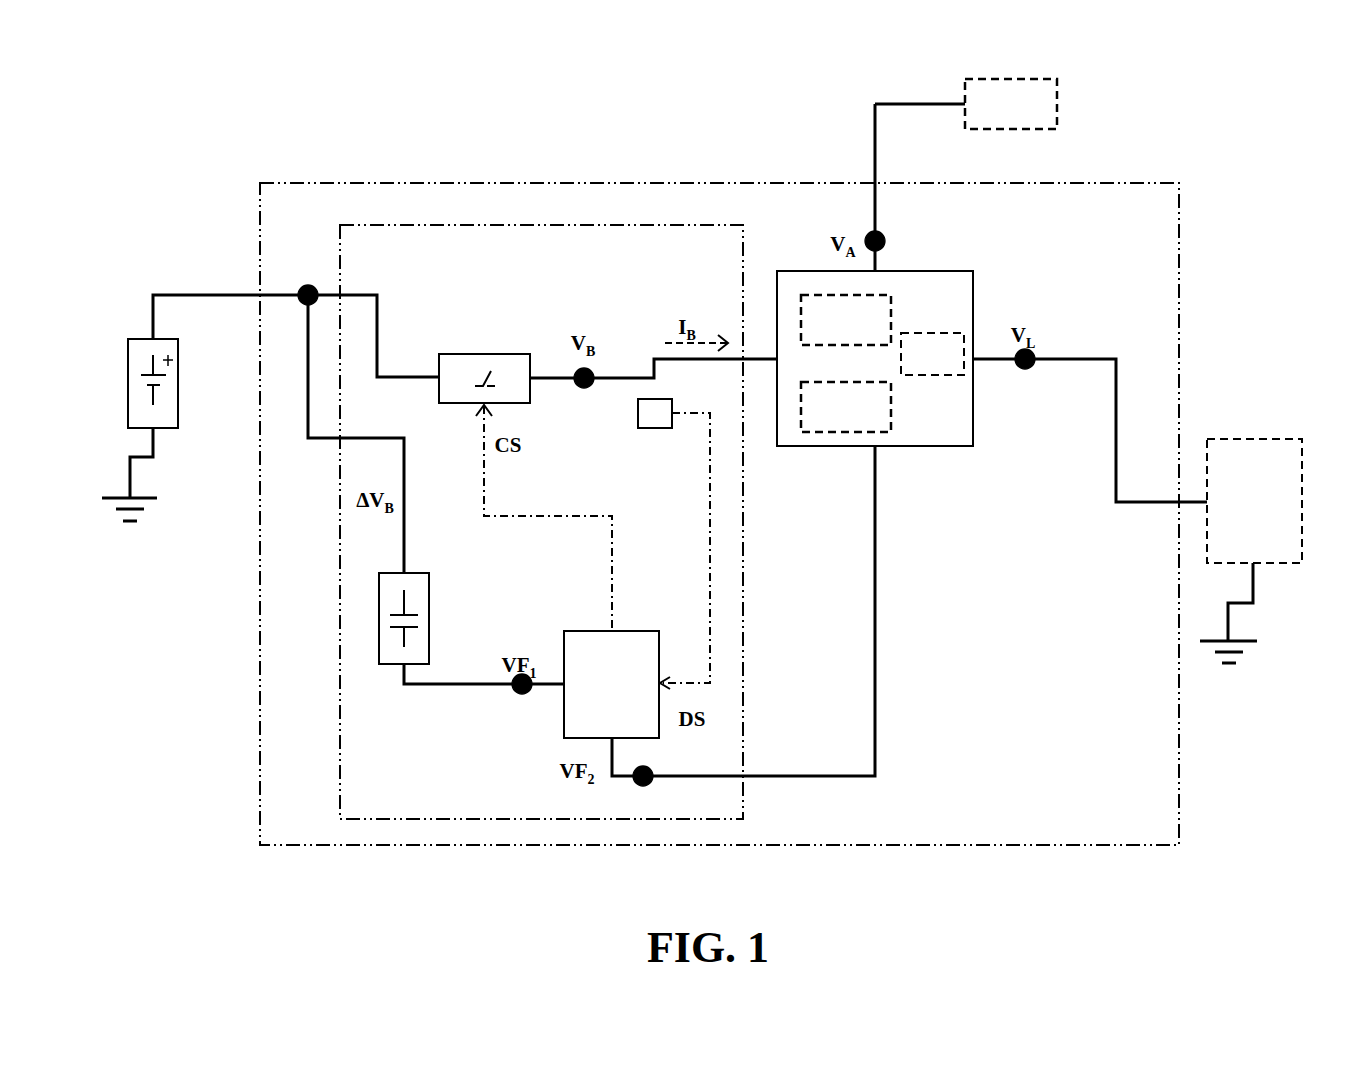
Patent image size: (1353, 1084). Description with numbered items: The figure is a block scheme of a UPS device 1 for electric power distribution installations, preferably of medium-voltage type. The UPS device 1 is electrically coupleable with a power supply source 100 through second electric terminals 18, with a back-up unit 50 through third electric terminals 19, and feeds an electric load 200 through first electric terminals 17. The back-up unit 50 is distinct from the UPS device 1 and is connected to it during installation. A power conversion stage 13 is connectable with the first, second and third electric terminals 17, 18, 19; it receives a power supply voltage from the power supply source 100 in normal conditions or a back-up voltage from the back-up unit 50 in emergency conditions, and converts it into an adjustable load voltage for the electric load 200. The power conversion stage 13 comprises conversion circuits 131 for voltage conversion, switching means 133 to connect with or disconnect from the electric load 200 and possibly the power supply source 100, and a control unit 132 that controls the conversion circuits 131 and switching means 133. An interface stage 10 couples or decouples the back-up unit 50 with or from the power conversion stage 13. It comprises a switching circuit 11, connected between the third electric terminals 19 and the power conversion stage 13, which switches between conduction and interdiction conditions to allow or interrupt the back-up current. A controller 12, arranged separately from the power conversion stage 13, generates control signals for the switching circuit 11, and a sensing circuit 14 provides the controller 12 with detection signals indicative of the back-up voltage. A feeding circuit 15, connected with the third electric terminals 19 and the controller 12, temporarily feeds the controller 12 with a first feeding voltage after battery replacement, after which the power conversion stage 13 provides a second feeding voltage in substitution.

The UPS device 1 is at (553, 181).
The interface stage 10 is at (633, 223).
The switching circuit 11 is at (505, 359).
The controller 12 is at (630, 634).
The power conversion stage 13 is at (875, 339).
The sensing circuit 14 is at (648, 423).
The feeding circuit 15 is at (415, 582).
The first electric terminals 17 is at (1028, 369).
The second electric terminals 18 is at (883, 240).
The third electric terminals 19 is at (308, 301).
The back-up unit 50 is at (141, 346).
The power supply source 100 is at (1020, 89).
The conversion circuits 131 is at (846, 320).
The control unit 132 is at (846, 407).
The switching means 133 is at (932, 354).
The electric load 200 is at (1253, 446).